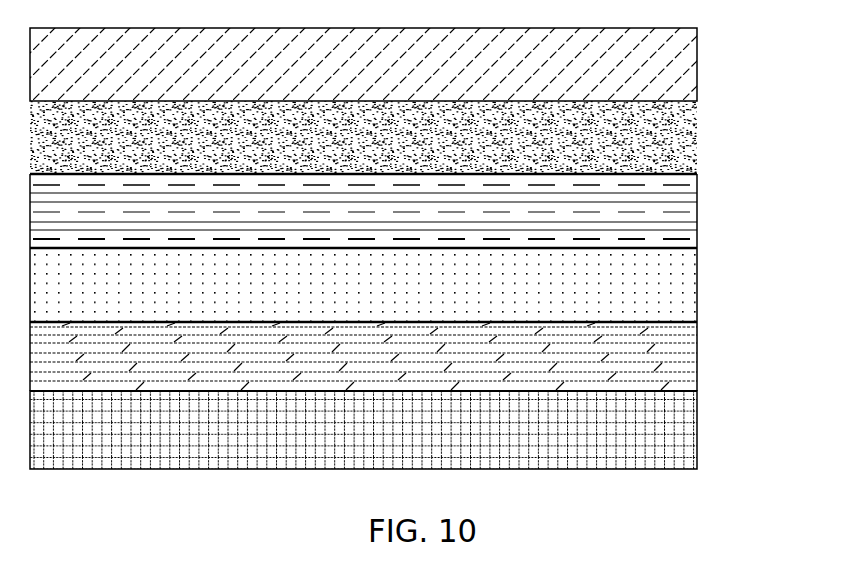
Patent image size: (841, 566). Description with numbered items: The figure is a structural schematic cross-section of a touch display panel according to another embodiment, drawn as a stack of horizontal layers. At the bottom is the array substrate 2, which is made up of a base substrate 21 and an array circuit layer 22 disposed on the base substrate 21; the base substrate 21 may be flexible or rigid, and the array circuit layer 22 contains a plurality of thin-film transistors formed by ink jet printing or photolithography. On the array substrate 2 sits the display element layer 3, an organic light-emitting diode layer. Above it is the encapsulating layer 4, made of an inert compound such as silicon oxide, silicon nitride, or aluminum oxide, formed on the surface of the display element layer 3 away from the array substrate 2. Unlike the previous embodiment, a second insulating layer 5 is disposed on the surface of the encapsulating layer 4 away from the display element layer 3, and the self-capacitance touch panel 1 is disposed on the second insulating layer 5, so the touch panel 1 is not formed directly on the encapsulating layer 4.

The self-capacitance touch panel 1 is at (667, 82).
The second insulating layer 5 is at (667, 165).
The encapsulating layer 4 is at (685, 210).
The display element layer 3 is at (675, 305).
The array substrate 2 is at (418, 395).
The array circuit layer 22 is at (667, 385).
The base substrate 21 is at (667, 460).